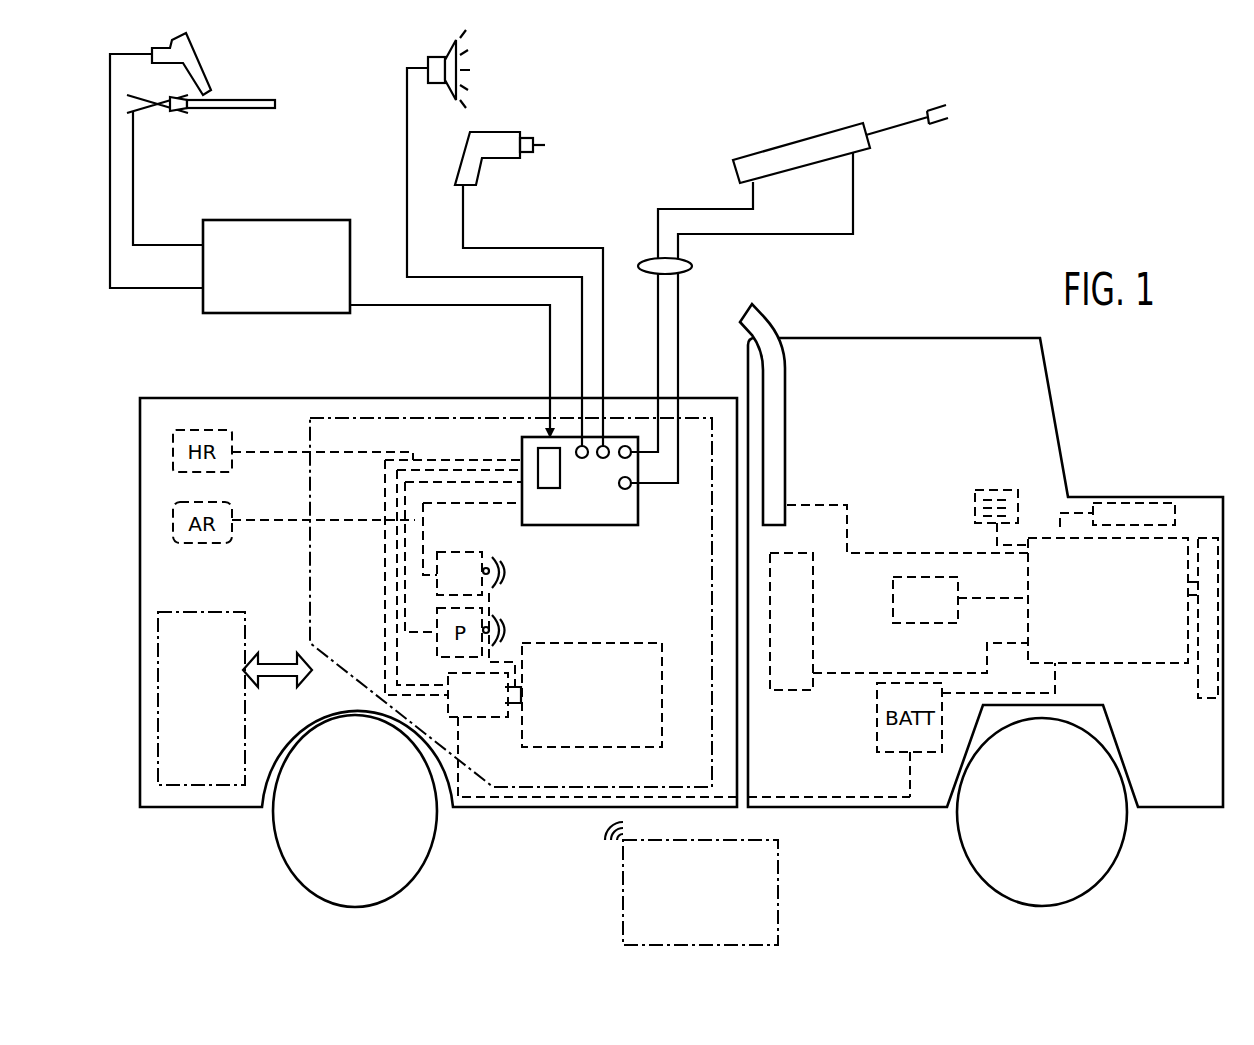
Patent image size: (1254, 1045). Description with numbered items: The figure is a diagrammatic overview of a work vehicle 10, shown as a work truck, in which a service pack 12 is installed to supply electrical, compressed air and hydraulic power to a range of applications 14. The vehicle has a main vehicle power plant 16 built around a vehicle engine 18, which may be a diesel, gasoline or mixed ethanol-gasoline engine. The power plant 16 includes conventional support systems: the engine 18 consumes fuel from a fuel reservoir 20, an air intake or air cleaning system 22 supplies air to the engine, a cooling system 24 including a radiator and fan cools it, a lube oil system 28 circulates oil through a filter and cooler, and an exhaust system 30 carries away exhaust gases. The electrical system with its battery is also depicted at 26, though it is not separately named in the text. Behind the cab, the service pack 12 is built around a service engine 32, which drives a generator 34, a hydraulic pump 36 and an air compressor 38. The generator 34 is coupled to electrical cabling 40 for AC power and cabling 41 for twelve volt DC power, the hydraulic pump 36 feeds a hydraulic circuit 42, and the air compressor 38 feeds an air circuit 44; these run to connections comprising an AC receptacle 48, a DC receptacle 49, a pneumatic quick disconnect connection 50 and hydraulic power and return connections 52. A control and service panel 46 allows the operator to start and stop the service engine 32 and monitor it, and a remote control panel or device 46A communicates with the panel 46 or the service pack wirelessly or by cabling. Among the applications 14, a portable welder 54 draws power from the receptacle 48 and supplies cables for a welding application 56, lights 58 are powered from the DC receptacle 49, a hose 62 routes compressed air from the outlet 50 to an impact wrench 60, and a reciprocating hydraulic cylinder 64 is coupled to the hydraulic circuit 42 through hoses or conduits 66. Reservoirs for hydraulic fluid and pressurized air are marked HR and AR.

The work vehicle 10 is at (203, 830).
The service pack 12 is at (298, 593).
The applications 14 is at (801, 284).
The main vehicle power plant 16 is at (1078, 428).
The vehicle engine 18 is at (1106, 666).
The fuel reservoir 20 is at (790, 690).
The air intake or air cleaning system 22 is at (1113, 503).
The cooling system 24 is at (1210, 701).
The vehicle control module 26 is at (975, 507).
The lube oil system 28 is at (893, 593).
The exhaust system 30 is at (783, 439).
The service engine 32 is at (578, 643).
The generator 34 is at (480, 717).
The hydraulic pump 36 is at (455, 663).
The air compressor 38 is at (458, 552).
The electrical cabling 40 is at (387, 623).
The electrical cabling 41 is at (393, 660).
The hydraulic circuit 42 is at (403, 572).
The air circuit 44 is at (420, 515).
The control and service panel 46 is at (203, 612).
The remote control panel or device 46A is at (778, 893).
The electrical receptacle 48 is at (538, 458).
The electrical receptacle 49 is at (578, 446).
The pneumatic connection 50 is at (606, 446).
The hydraulic power and return connections 52 is at (630, 456).
The portable welder 54 is at (288, 220).
The welding application 56 is at (248, 100).
The lights 58 is at (435, 57).
The impact wrench 60 is at (497, 132).
The hose 62 is at (533, 248).
The reciprocating hydraulic cylinder 64 is at (805, 140).
The hoses or conduits 66 is at (645, 262).